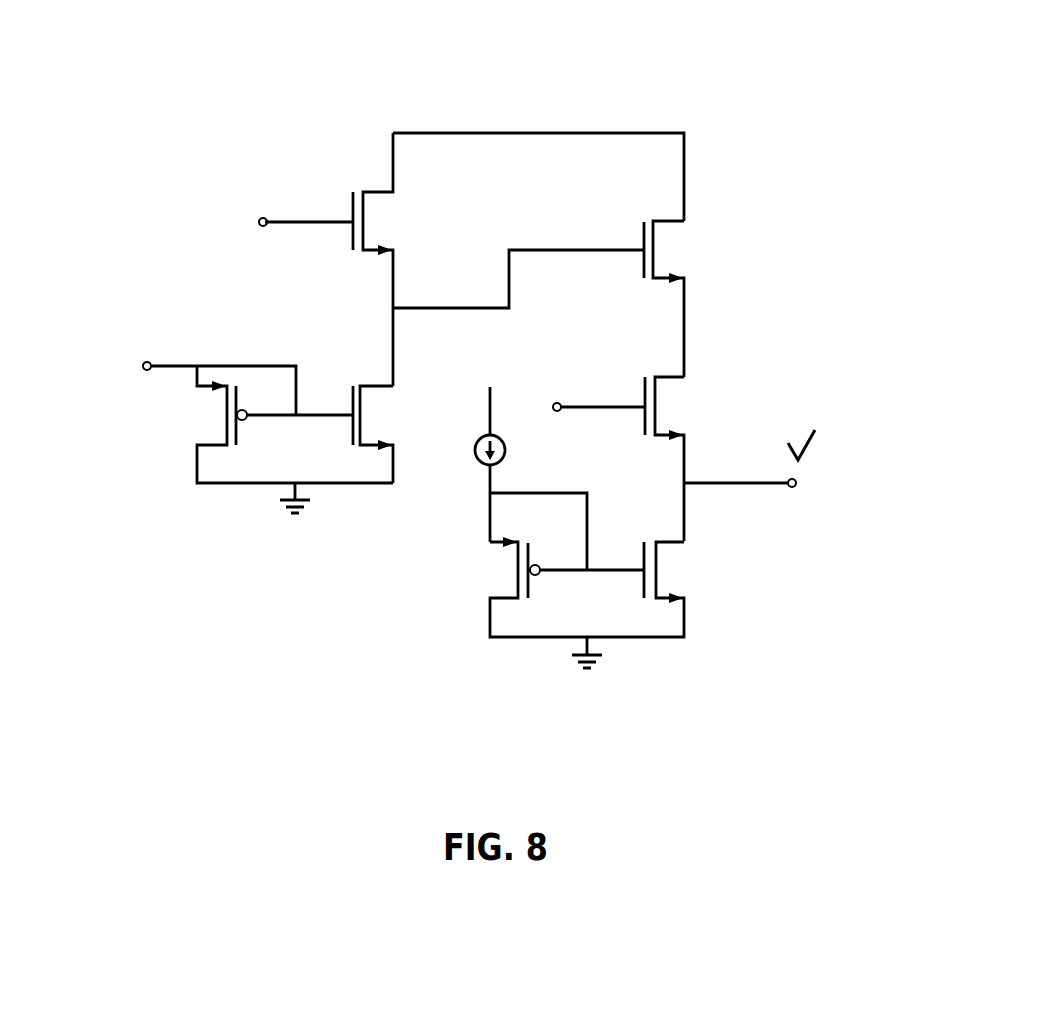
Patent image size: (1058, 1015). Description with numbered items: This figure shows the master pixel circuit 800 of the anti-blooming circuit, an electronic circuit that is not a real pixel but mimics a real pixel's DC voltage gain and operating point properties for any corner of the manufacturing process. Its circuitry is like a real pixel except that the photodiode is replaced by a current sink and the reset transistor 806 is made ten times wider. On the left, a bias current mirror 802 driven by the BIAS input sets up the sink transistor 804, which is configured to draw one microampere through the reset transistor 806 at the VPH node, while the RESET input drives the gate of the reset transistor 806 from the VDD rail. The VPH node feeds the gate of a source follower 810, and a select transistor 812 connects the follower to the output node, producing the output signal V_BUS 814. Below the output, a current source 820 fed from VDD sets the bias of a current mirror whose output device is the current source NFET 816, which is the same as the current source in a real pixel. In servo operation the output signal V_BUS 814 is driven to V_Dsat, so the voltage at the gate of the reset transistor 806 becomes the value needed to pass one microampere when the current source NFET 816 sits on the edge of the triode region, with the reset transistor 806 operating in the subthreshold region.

The master pixel circuit 800 is at (481, 340).
The bias current mirror 802 is at (117, 442).
The transistor 804 is at (380, 416).
The reset transistor 806 is at (365, 213).
The source follower transistor 810 is at (758, 274).
The select transistor 812 is at (610, 431).
The output signal V_BUS 814 is at (805, 458).
The current source NFET 816 is at (708, 580).
The current source 820 is at (517, 449).